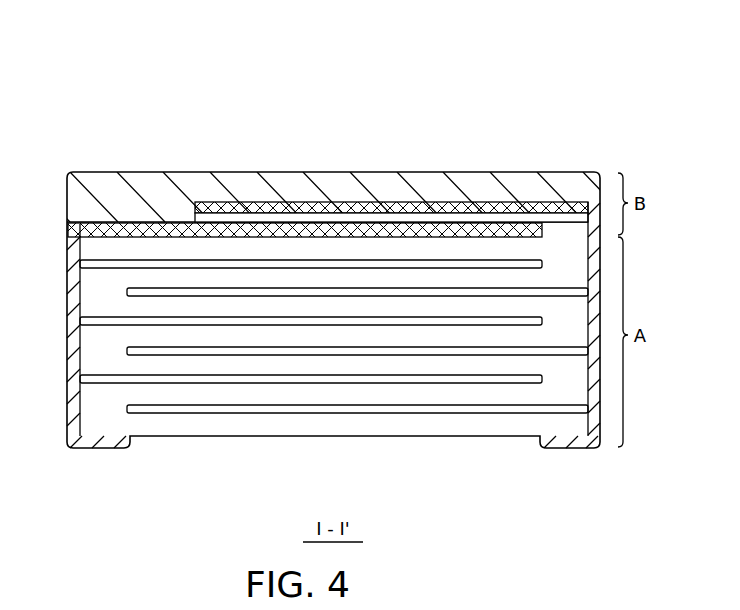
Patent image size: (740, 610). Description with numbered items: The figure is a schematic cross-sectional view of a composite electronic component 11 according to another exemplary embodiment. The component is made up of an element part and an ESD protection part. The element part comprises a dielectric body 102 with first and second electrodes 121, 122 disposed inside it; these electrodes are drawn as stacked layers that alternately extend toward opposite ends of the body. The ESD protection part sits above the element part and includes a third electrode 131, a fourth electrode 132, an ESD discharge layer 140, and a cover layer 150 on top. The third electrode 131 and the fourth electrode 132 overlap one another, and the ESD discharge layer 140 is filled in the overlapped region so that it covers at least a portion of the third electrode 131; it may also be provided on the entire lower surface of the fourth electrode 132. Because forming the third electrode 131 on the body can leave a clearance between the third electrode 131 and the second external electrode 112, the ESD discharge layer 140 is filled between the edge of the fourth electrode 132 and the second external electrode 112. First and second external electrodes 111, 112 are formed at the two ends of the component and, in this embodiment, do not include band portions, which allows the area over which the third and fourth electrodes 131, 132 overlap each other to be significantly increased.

The composite electronic component 11 is at (312, 73).
The dielectric body 102 is at (290, 394).
The first external electrode 111 is at (107, 449).
The second external electrode 112 is at (560, 449).
The first electrode 121 is at (152, 380).
The second electrode 122 is at (233, 411).
The third electrode 131 is at (175, 222).
The fourth electrode 132 is at (402, 206).
The ESD discharge layer 140 is at (313, 219).
The cover layer 150 is at (514, 190).